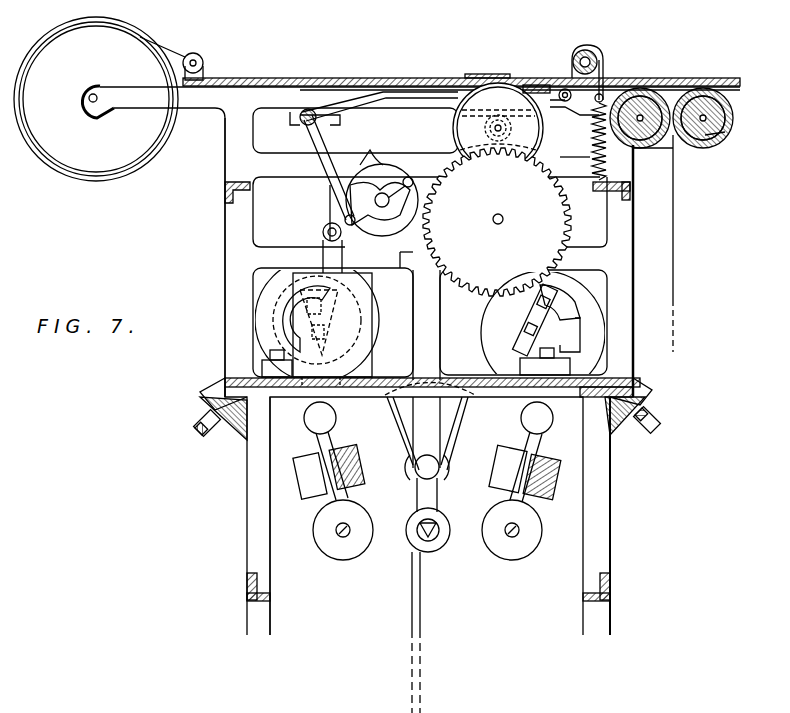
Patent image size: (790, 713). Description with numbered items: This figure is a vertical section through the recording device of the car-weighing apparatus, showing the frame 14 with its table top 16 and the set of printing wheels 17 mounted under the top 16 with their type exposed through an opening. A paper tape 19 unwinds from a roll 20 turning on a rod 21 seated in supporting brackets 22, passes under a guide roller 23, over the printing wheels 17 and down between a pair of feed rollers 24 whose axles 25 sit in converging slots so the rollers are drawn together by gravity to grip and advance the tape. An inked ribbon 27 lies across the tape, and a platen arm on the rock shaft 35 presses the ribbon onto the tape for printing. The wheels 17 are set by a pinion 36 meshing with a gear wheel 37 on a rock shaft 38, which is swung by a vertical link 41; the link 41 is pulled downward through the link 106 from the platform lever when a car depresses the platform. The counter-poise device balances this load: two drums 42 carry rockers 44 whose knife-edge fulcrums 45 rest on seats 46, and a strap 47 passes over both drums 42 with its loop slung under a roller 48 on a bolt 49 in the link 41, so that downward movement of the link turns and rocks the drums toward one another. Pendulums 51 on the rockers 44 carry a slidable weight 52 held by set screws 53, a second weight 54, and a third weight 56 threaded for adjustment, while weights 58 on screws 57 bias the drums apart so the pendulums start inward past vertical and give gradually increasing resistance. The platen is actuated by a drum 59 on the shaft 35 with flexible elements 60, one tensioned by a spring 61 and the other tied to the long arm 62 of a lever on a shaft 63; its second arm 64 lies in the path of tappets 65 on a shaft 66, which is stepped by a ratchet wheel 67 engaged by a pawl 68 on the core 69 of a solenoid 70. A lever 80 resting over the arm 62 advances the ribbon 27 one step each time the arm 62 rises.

The frame 14 is at (237, 236).
The table top 16 is at (333, 78).
The printing wheels 17 is at (483, 113).
The tape 19 is at (277, 78).
The roll 20 is at (73, 162).
The rod 21 is at (93, 93).
The supporting brackets 22 is at (106, 114).
The guide roller 23 is at (194, 53).
The feed rollers 24 is at (655, 142).
The axles 25 is at (726, 133).
The inked ribbon 27 is at (470, 76).
The rock shaft 35 is at (604, 54).
The pinion 36 is at (490, 127).
The gear wheel 37 is at (497, 222).
The rock shaft 38 is at (495, 224).
The vertical link 41 is at (420, 497).
The drums 42 is at (266, 348).
The rockers 44 is at (276, 314).
The knife-edge fulcrums 45 is at (330, 358).
The seats 46 is at (326, 373).
The strap 47 is at (406, 430).
The roller 48 is at (447, 478).
The bolt 49 is at (415, 468).
The pendulums 51 is at (541, 447).
The weight 52 is at (336, 550).
The set screws 53 is at (505, 532).
The second weight 54 is at (532, 416).
The third weight 56 is at (553, 492).
The screws 57 is at (656, 413).
The weights 58 is at (213, 387).
The drum 59 is at (585, 50).
The flexible elements 60 is at (562, 89).
The spring 61 is at (616, 176).
The long arm 62 is at (388, 92).
The shaft 63 is at (303, 124).
The second arm 64 is at (333, 157).
The tappets 65 is at (384, 176).
The shaft 66 is at (410, 178).
The ratchet wheel 67 is at (388, 238).
The pawl 68 is at (325, 198).
The core 69 is at (320, 247).
The solenoid 70 is at (372, 288).
The lever 80 is at (540, 85).
The link 106 is at (412, 602).